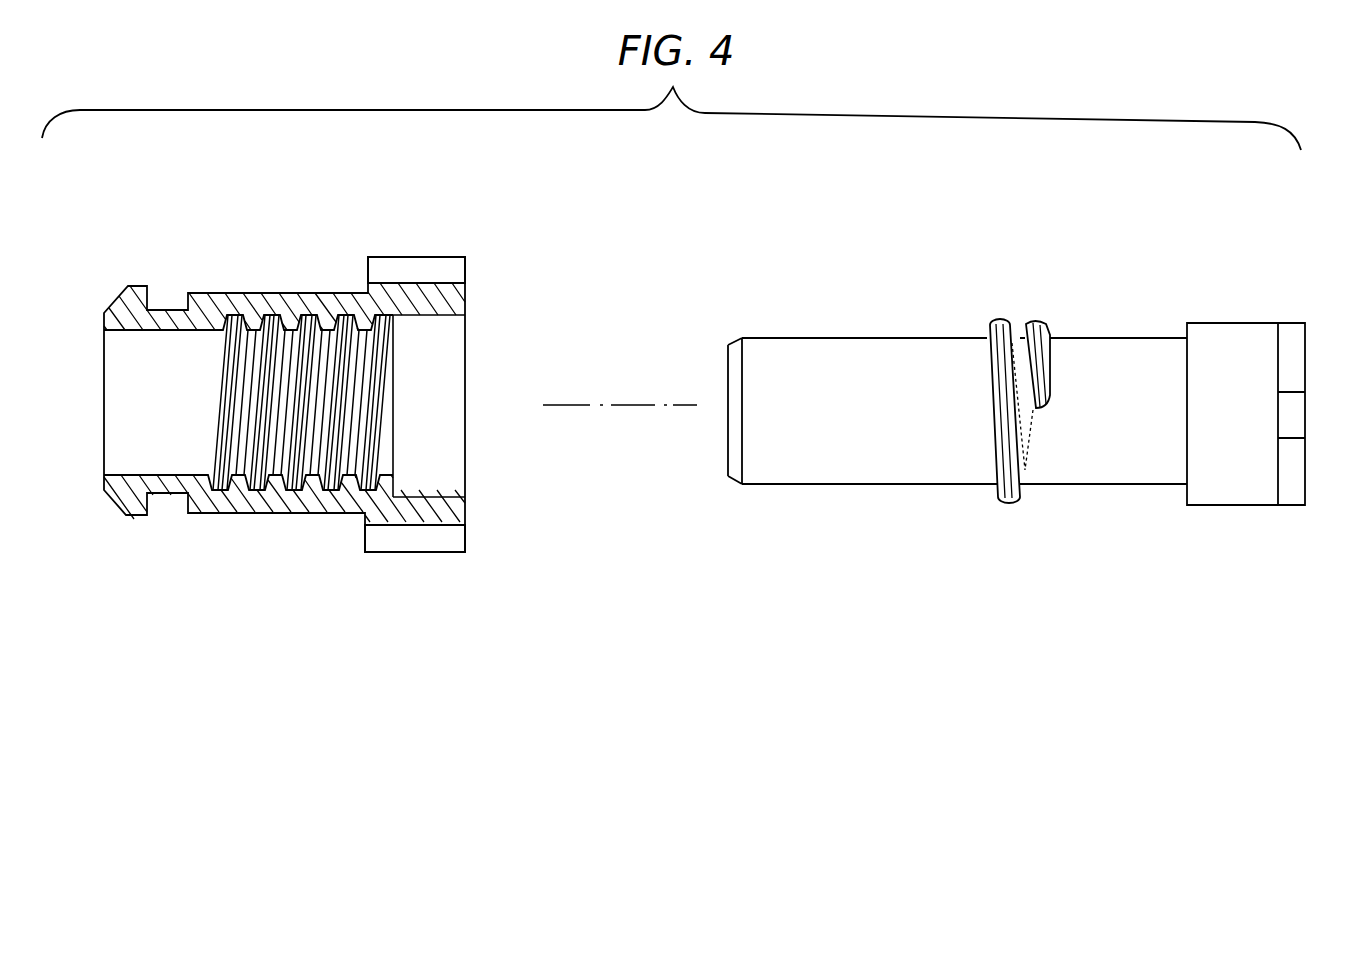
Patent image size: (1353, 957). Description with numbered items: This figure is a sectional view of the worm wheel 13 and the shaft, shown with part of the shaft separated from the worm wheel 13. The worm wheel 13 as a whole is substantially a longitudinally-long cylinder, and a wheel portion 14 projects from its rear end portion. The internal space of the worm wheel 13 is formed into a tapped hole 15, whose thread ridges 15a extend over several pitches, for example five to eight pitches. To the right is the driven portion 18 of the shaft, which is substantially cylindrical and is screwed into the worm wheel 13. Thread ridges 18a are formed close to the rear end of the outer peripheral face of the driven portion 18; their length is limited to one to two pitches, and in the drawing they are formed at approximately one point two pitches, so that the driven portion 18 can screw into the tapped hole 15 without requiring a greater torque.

The worm wheel 13 is at (254, 292).
The wheel portion 14 is at (428, 548).
The tapped hole 15 is at (262, 327).
The thread ridges 15a is at (316, 346).
The driven portion 18 is at (858, 340).
The thread ridges 18a is at (1000, 318).